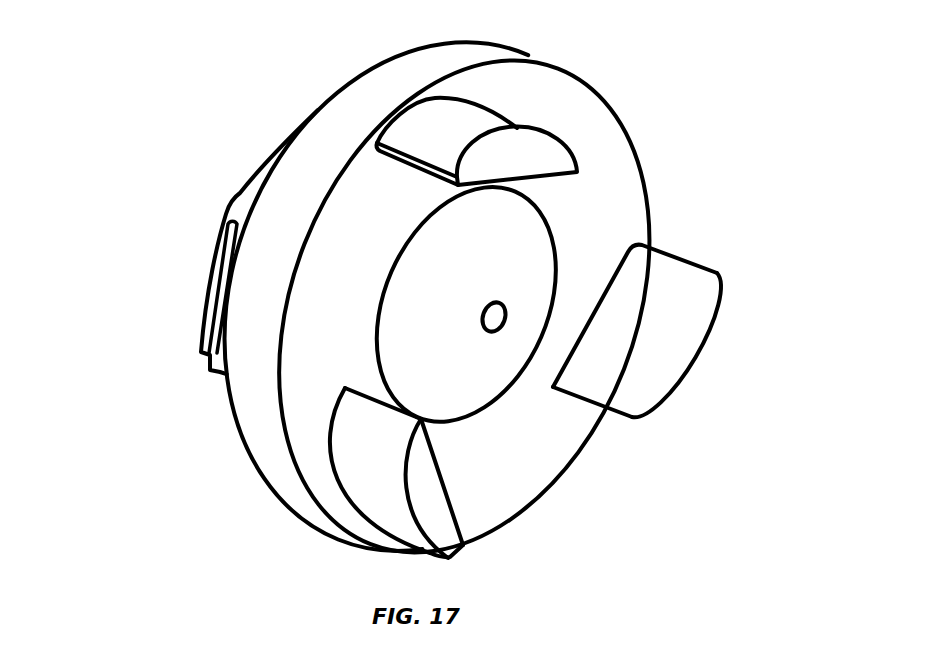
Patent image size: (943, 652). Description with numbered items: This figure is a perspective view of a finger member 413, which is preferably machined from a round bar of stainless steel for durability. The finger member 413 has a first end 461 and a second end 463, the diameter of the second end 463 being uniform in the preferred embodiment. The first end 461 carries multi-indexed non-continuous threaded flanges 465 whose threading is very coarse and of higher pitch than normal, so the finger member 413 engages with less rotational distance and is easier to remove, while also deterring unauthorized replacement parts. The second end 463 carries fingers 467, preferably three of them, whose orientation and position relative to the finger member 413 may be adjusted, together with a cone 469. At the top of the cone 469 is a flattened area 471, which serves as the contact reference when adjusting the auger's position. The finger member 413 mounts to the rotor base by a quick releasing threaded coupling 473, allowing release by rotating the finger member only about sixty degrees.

The first end 461 is at (213, 103).
The finger member 413 is at (240, 437).
The second end 463 is at (617, 463).
The threaded flanges 465 is at (203, 335).
The fingers 467 is at (378, 142).
The cone 469 is at (553, 263).
The flattened area 471 is at (497, 332).
The quick releasing threaded coupling 473 is at (212, 217).